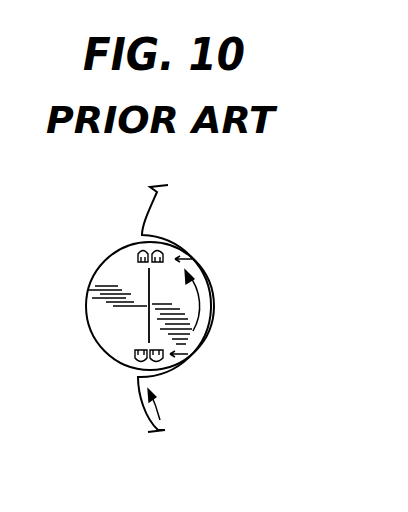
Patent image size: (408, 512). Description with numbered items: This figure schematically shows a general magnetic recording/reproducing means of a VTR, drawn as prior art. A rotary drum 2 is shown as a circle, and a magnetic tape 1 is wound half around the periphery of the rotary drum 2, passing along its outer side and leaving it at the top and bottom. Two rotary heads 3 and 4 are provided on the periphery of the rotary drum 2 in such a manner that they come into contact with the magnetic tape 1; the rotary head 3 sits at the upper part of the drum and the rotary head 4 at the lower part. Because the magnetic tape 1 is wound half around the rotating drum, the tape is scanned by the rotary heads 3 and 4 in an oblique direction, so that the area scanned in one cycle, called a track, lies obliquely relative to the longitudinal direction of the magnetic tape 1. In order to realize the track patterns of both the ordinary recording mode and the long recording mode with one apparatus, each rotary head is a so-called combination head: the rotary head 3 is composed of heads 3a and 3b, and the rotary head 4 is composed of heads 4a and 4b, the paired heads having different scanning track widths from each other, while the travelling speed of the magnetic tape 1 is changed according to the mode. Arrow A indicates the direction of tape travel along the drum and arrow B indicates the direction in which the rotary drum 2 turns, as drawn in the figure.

The magnetic tape 1 is at (158, 200).
The rotary drum 2 is at (86, 314).
The rotary head 3 is at (203, 257).
The head 3a is at (138, 251).
The head 3b is at (161, 250).
The rotary head 4 is at (209, 354).
The head 4a is at (182, 363).
The head 4b is at (129, 365).
The tape travel direction A is at (160, 409).
The drum rotation direction B is at (200, 300).